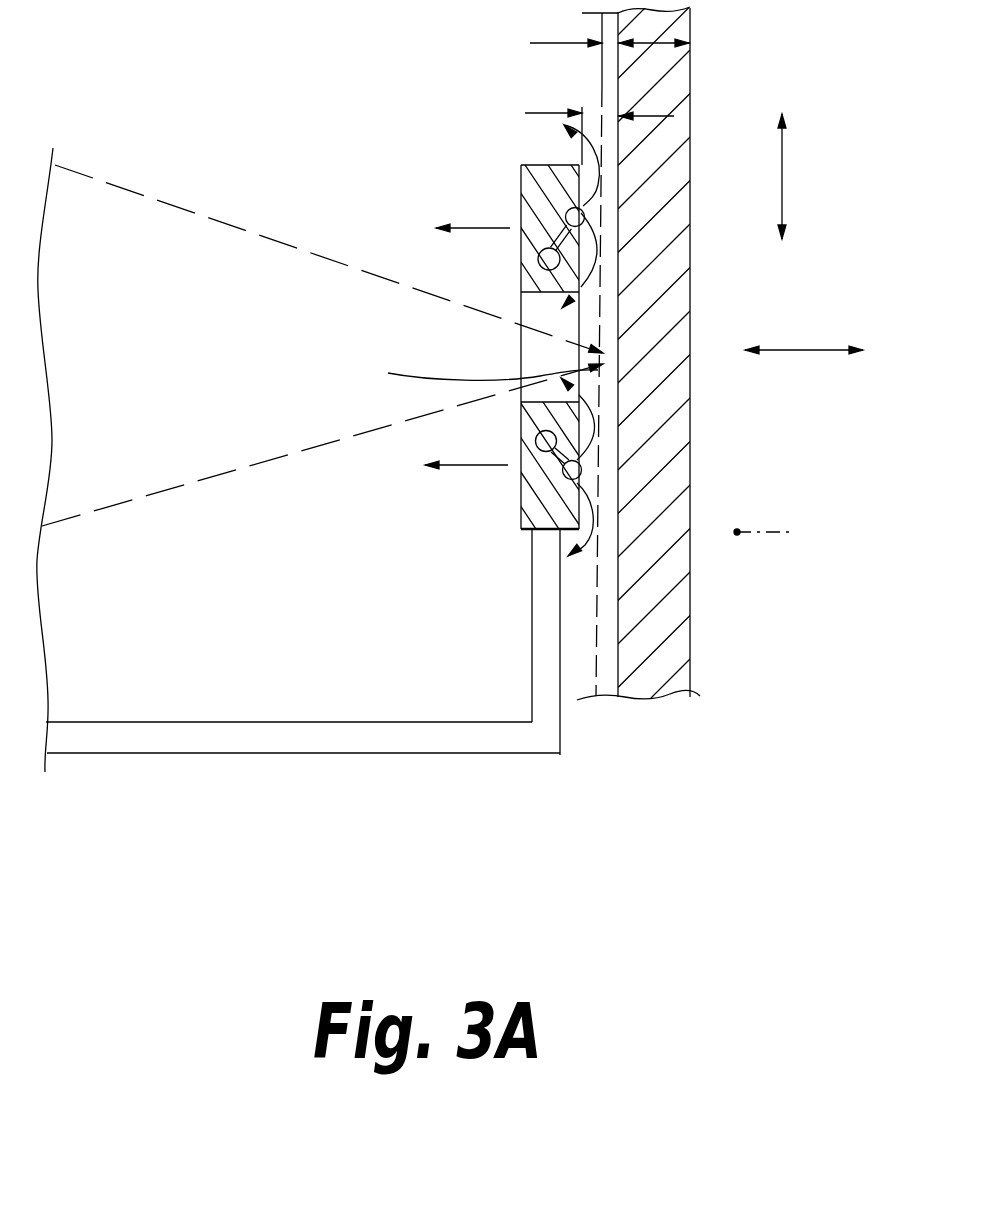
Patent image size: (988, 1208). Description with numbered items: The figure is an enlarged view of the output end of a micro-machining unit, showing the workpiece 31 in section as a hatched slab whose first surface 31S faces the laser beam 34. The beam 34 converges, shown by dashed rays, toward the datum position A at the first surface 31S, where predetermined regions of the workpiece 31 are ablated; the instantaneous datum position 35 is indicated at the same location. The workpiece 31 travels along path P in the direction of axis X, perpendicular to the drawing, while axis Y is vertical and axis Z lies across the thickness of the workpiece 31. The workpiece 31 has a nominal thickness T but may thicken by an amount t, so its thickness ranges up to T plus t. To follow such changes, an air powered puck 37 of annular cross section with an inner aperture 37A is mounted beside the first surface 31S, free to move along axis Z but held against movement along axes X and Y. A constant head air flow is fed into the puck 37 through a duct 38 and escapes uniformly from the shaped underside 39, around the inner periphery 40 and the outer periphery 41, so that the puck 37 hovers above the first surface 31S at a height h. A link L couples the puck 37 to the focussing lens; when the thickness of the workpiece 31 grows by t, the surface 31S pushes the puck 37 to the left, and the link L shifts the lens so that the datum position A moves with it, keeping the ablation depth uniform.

The workpiece 31 is at (672, 259).
The first surface 31S is at (611, 68).
The laser beam 34 is at (232, 245).
The datum position 35 is at (476, 369).
The air powered puck 37 is at (530, 512).
The inner aperture 37A is at (530, 307).
The duct 38 is at (548, 247).
The shaped underside 39 is at (579, 428).
The inner periphery 40 is at (579, 399).
The outer periphery 41 is at (585, 542).
The datum position A is at (600, 352).
The path P is at (467, 346).
The link L is at (478, 737).
The thickness variation t is at (566, 30).
The thickness T is at (645, 43).
The height h is at (599, 125).
The axis X is at (774, 533).
The axis Y is at (793, 176).
The axis Z is at (804, 335).